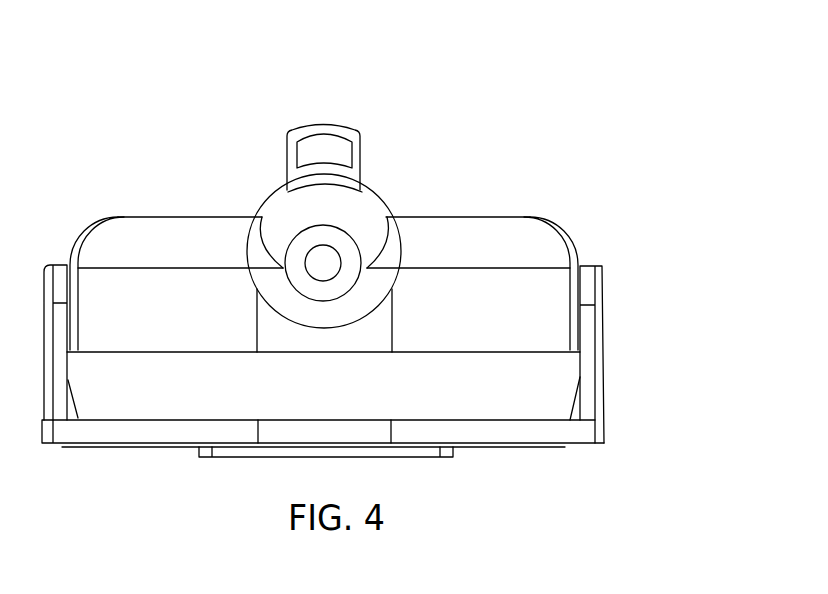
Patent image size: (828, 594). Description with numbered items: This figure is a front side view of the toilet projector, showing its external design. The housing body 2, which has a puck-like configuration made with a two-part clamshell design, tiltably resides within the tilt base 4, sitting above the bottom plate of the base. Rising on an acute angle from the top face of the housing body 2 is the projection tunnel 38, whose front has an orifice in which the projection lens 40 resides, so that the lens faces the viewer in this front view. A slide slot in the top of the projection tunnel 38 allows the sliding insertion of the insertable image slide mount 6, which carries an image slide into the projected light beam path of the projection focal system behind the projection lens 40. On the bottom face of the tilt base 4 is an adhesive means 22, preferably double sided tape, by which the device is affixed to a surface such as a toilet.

The housing body 2 is at (483, 233).
The tilt base 4 is at (585, 337).
The insertable image slide mount 6 is at (330, 124).
The adhesive means 22 is at (417, 457).
The projection tunnel 38 is at (365, 218).
The projection lens 40 is at (320, 258).